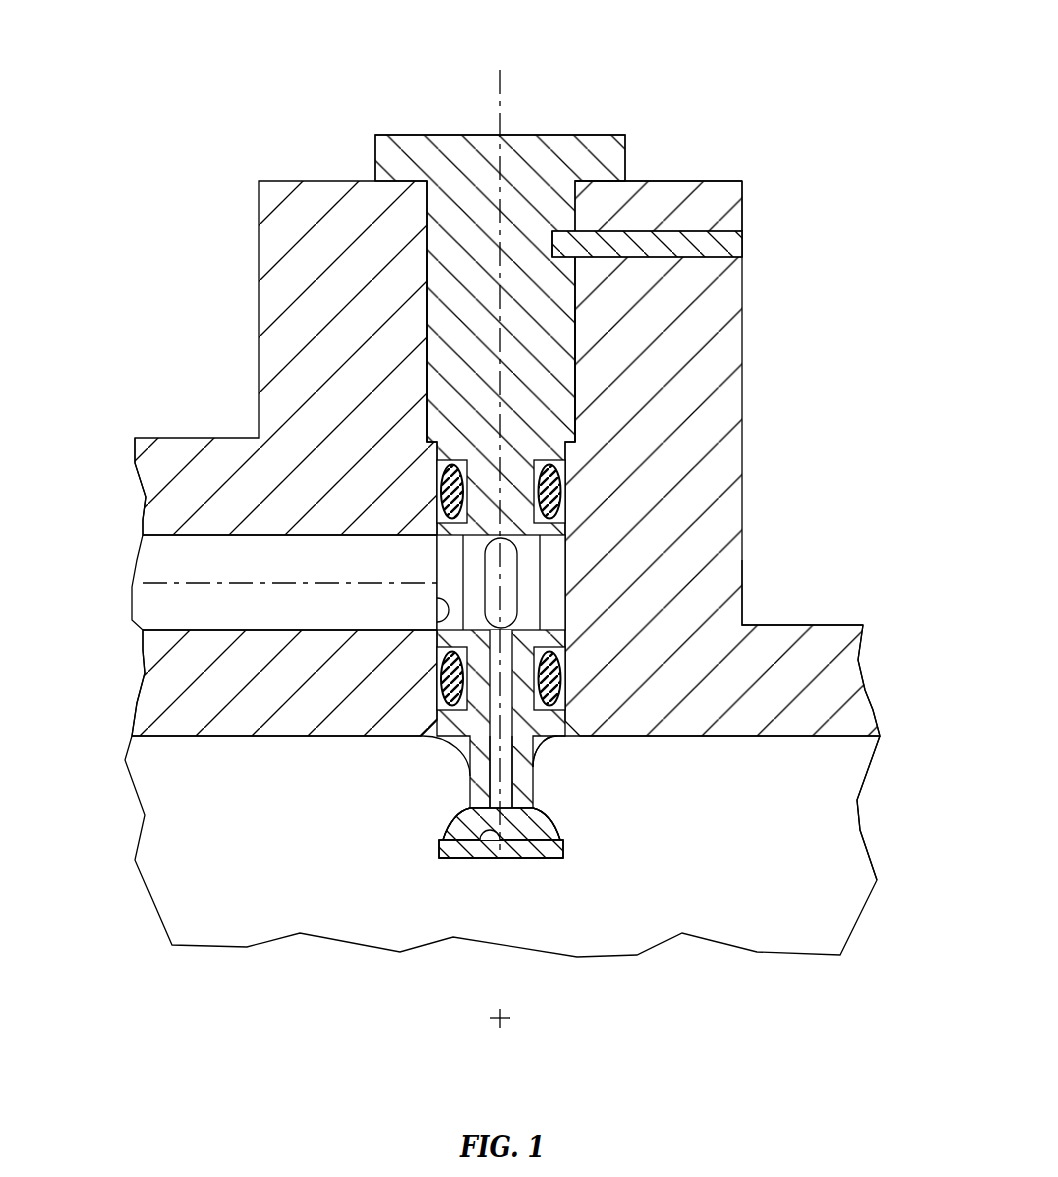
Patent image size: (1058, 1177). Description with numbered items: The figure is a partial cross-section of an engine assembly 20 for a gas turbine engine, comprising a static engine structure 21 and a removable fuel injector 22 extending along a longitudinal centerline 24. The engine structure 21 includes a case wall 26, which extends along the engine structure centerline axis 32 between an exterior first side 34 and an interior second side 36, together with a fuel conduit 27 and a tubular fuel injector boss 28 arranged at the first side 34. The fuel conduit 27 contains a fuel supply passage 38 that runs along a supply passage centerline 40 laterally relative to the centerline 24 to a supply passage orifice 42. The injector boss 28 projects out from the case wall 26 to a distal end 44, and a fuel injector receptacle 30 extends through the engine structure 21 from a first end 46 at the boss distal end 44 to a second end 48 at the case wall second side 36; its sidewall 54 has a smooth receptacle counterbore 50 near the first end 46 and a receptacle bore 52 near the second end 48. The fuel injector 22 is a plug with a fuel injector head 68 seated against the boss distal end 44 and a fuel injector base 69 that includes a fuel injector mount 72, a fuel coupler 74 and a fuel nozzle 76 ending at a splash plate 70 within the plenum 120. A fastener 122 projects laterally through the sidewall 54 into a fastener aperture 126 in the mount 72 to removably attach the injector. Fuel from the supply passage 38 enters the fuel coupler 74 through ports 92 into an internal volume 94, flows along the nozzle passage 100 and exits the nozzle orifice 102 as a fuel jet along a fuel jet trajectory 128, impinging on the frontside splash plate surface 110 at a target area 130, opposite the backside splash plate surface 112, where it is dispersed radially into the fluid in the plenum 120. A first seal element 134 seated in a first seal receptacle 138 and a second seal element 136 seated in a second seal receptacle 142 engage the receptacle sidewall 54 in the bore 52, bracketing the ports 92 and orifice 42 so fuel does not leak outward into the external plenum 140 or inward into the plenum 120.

The engine assembly 20 is at (220, 79).
The engine structure 21 is at (215, 229).
The fuel injector 22 is at (557, 100).
The longitudinal centerline 24 is at (498, 77).
The case wall 26 is at (868, 664).
The fuel conduit 27 is at (129, 492).
The fuel injector boss 28 is at (754, 312).
The fuel injector receptacle 30 is at (568, 746).
The centerline axis 32 is at (503, 1019).
The case wall first side 34 is at (810, 627).
The case wall second side 36 is at (830, 738).
The fuel supply passage 38 is at (176, 549).
The supply passage centerline 40 is at (166, 590).
The supply passage orifice 42 is at (437, 610).
The injector boss distal end 44 is at (718, 181).
The receptacle first end 46 is at (430, 181).
The receptacle second end 48 is at (561, 753).
The receptacle counterbore 50 is at (427, 291).
The receptacle bore 52 is at (437, 741).
The receptacle sidewall 54 is at (731, 198).
The fuel injector head 68 is at (634, 132).
The fuel injector base 69 is at (586, 311).
The splash plate 70 is at (473, 866).
The fuel injector mount 72 is at (577, 377).
The fuel injector fuel coupler 74 is at (569, 532).
The fuel injector fuel nozzle 76 is at (538, 800).
The ports 92 is at (441, 552).
The internal volume 94 is at (531, 601).
The nozzle passage 100 is at (498, 785).
The nozzle orifice 102 is at (536, 822).
The frontside splash plate surface 110 is at (461, 825).
The backside splash plate surface 112 is at (446, 860).
The plenum 120 is at (768, 864).
The fastener 122 is at (743, 243).
The fastener aperture 126 is at (555, 232).
The fuel jet trajectory 128 is at (528, 844).
The target area 130 is at (488, 866).
The first seal element 134 is at (437, 492).
The second seal element 136 is at (437, 702).
The first seal receptacle 138 is at (437, 522).
The external plenum 140 is at (730, 33).
The second seal receptacle 142 is at (437, 673).